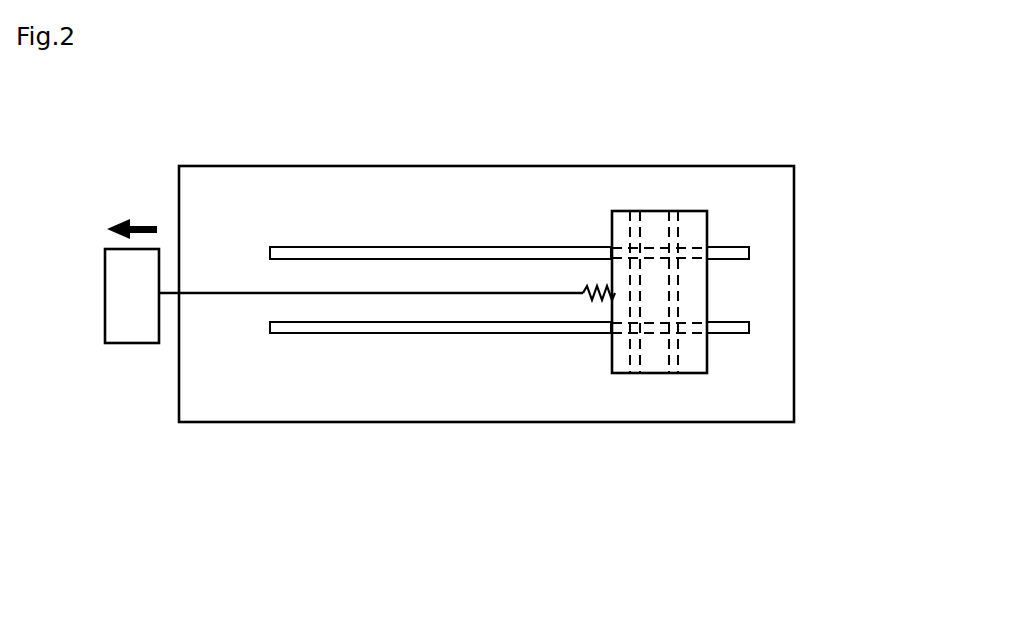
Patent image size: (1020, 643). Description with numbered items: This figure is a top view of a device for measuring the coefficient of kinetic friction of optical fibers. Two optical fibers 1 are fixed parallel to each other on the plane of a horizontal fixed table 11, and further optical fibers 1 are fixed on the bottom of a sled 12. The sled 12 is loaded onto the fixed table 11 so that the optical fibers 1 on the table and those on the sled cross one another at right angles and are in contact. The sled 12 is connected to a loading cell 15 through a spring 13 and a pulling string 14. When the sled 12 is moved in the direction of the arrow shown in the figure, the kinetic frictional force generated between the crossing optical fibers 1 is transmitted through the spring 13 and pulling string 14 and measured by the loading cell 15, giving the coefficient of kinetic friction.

The optical fiber 1 is at (457, 247).
The horizontal fixed table 11 is at (774, 232).
The sled 12 is at (652, 370).
The spring 13 is at (590, 296).
The pulling string 14 is at (313, 293).
The loading cell 15 is at (148, 335).